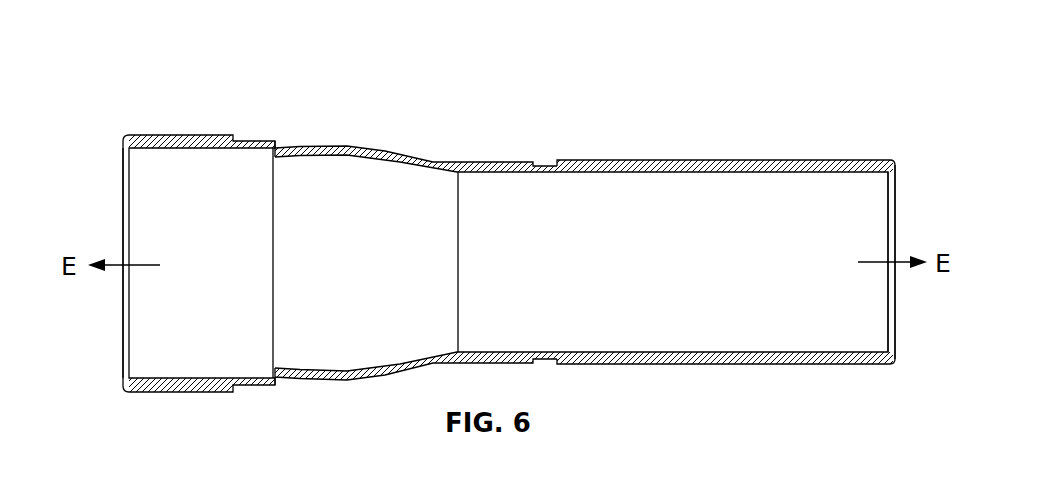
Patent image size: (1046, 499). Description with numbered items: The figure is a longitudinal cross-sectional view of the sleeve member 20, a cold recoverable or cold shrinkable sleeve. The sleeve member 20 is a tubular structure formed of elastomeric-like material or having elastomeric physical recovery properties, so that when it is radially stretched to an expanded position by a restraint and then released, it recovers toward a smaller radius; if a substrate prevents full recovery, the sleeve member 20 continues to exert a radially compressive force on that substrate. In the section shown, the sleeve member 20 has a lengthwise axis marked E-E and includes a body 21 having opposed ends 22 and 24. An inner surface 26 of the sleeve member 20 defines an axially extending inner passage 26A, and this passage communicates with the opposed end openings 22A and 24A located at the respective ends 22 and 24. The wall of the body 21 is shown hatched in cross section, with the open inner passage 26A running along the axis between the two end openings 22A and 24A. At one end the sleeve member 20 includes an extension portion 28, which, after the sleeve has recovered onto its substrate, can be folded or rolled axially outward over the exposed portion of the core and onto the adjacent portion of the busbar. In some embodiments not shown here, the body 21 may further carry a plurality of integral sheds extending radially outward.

The sleeve member 20 is at (177, 37).
The body 21 is at (512, 170).
The end 22 is at (123, 190).
The end opening 22A is at (123, 225).
The end 24 is at (896, 193).
The end opening 24A is at (895, 233).
The inner surface 26 is at (637, 190).
The inner passage 26A is at (603, 274).
The extension portion 28 is at (186, 136).